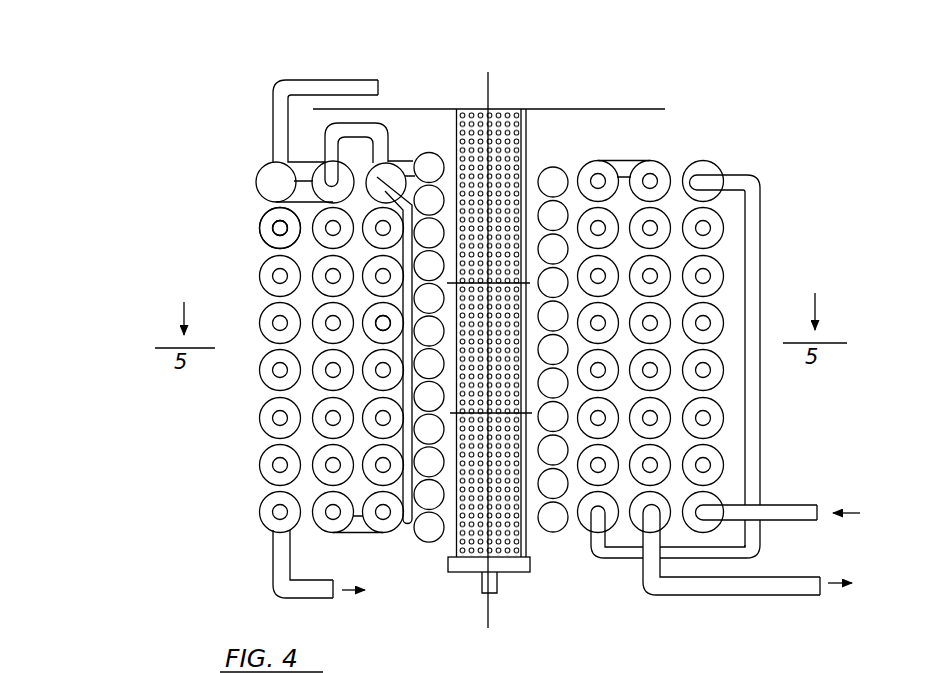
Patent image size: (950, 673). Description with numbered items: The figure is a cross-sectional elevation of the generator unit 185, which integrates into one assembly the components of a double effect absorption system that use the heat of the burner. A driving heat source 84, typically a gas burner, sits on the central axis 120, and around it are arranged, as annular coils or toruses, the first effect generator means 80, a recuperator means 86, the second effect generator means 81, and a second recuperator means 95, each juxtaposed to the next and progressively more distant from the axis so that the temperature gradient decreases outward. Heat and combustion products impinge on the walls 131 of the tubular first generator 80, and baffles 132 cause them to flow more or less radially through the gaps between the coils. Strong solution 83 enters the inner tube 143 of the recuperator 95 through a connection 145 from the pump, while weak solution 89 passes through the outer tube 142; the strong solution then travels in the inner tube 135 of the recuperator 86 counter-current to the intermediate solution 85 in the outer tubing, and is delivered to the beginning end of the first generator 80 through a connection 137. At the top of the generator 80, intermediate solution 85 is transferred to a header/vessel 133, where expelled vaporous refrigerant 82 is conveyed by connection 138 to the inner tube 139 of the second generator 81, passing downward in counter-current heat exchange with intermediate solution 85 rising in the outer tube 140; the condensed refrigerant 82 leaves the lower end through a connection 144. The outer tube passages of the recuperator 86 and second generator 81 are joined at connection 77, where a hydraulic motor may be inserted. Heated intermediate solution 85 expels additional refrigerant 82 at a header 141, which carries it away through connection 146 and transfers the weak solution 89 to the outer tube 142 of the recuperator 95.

The connection 77 is at (360, 532).
The first effect generator means 80 is at (425, 560).
The second effect generator means 81 is at (308, 542).
The refrigerant 82 is at (314, 87).
The strong solution 83 is at (382, 323).
The driving heat source 84 is at (515, 565).
The intermediate solution 85 is at (323, 217).
The recuperator means 86 is at (388, 552).
The weak solution 89 is at (262, 236).
The recuperator means 95 is at (258, 538).
The central axis 120 is at (488, 90).
The walls 131 is at (423, 430).
The baffles 132 is at (528, 118).
The header/vessel 133 is at (397, 165).
The inner tube 135 is at (375, 285).
The connection 137 is at (408, 510).
The connection 138 is at (352, 122).
The inner tube 139 is at (315, 287).
The outer tube 140 is at (347, 205).
The header 141 is at (265, 173).
The outer tube 142 is at (259, 222).
The inner tube 143 is at (268, 507).
The connection 144 is at (700, 575).
The connection 145 is at (797, 522).
The connection 146 is at (273, 108).
The generator unit 185 is at (848, 152).